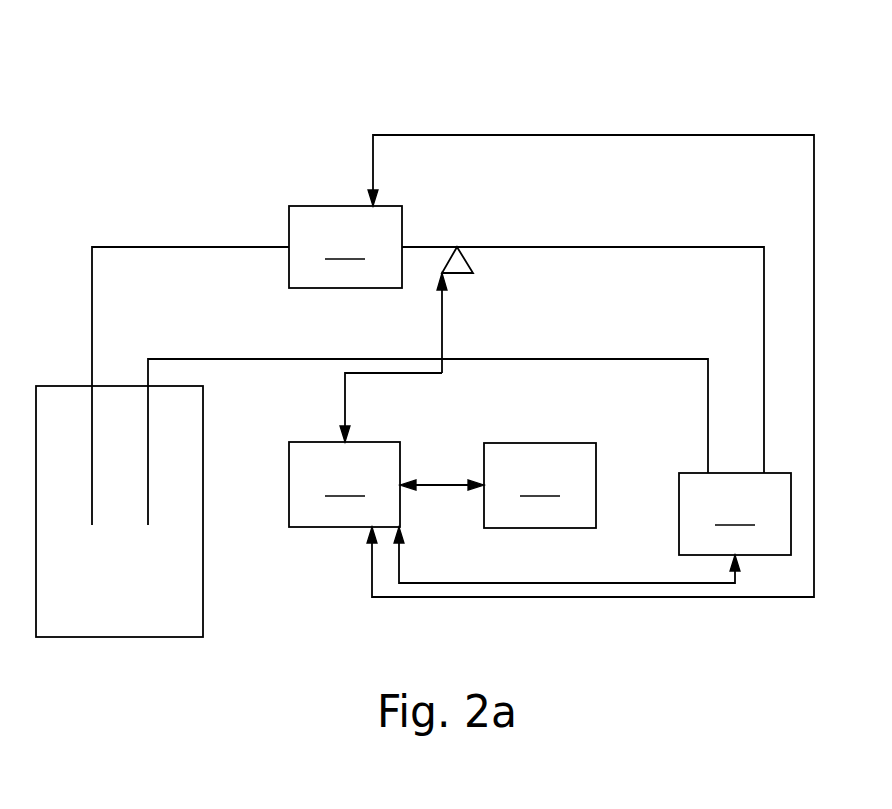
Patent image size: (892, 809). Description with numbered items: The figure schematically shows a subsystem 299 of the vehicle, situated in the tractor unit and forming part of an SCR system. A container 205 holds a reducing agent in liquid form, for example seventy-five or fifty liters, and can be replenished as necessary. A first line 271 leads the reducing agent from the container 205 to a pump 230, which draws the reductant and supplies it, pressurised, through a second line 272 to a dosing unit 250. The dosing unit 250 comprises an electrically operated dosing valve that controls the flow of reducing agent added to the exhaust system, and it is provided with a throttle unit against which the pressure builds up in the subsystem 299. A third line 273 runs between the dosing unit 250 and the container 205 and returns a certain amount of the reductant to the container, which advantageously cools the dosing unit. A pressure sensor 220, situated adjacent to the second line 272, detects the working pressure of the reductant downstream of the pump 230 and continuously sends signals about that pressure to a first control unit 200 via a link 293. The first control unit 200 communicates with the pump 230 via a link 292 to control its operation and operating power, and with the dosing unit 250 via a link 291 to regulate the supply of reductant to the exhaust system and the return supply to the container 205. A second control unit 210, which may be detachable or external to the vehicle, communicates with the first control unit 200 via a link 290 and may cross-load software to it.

The container 205 is at (63, 637).
The pump 230 is at (345, 247).
The first control unit 200 is at (344, 484).
The second control unit 210 is at (540, 485).
The dosing unit 250 is at (735, 514).
The pressure sensor 220 is at (473, 274).
The link 293 is at (345, 415).
The first line 271 is at (148, 247).
The second line 272 is at (532, 247).
The third line 273 is at (682, 359).
The link 291 is at (600, 583).
The link 292 is at (617, 597).
The link 290 is at (428, 483).
The subsystem 299 is at (571, 100).